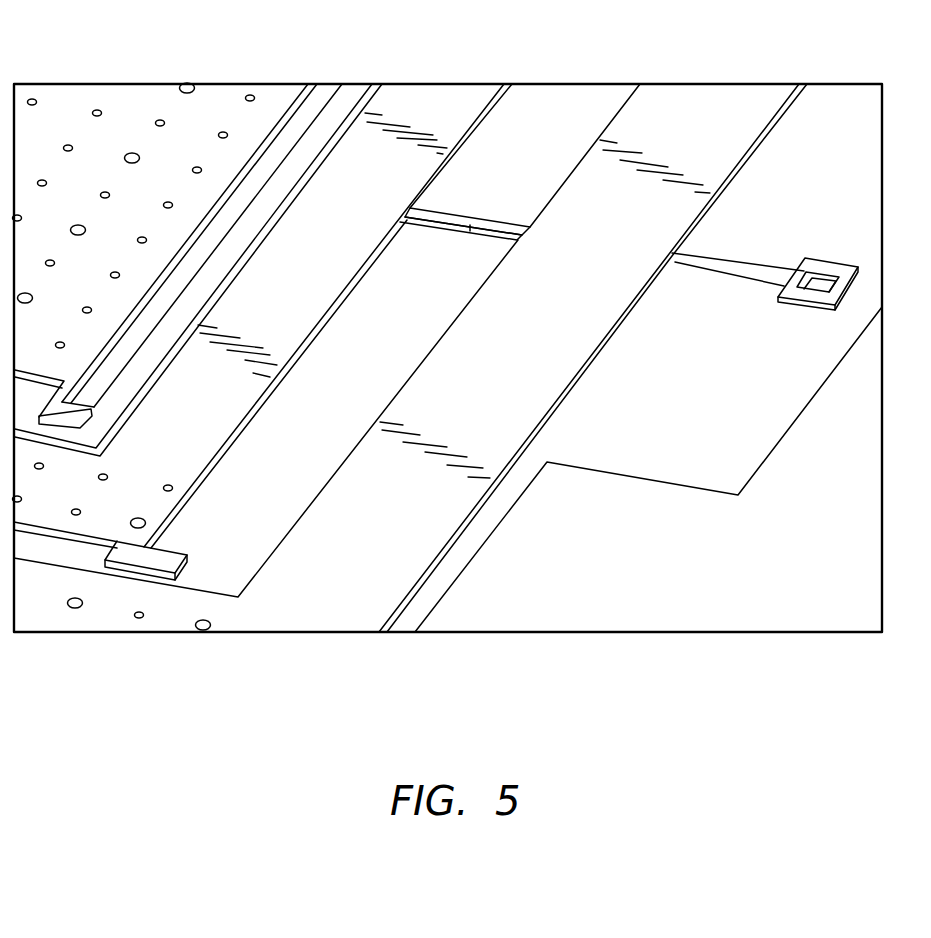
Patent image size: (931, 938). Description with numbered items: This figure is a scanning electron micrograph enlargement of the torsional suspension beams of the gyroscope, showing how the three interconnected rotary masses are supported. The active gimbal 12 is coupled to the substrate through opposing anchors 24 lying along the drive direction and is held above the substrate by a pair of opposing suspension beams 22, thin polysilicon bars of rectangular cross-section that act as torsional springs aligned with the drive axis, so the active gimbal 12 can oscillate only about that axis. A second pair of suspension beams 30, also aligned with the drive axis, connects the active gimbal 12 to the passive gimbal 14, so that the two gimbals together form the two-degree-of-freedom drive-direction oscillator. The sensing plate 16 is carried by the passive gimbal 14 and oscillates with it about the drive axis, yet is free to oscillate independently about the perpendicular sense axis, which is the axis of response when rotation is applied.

The active gimbal 12 is at (350, 578).
The passive gimbal 14 is at (130, 495).
The sensing plate 16 is at (139, 205).
The suspension beams 22 is at (748, 282).
The anchors 24 is at (820, 260).
The suspension beams 30 is at (472, 225).